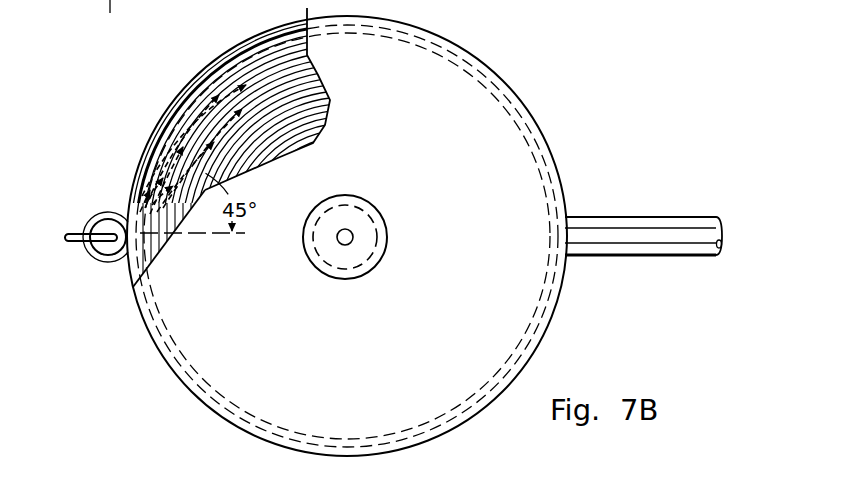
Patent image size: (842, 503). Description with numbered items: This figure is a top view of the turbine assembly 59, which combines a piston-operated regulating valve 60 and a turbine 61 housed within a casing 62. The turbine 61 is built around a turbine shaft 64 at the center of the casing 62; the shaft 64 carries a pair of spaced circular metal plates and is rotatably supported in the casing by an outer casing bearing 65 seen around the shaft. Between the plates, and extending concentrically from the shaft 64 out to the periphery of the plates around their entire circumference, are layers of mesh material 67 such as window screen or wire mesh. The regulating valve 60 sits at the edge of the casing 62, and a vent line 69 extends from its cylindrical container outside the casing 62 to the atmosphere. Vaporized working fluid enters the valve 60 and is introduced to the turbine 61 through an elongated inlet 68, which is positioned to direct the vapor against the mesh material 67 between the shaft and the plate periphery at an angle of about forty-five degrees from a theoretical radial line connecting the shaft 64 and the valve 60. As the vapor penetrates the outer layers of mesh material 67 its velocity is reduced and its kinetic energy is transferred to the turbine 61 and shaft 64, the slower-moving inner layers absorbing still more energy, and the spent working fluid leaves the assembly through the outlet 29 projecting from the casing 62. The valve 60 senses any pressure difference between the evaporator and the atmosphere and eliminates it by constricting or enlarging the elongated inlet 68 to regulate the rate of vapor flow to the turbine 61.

The outlet 29 is at (628, 230).
The turbine assembly 59 is at (607, 93).
The piston-operated regulating valve 60 is at (103, 250).
The turbine 61 is at (167, 332).
The casing 62 is at (555, 297).
The turbine shaft 64 is at (346, 229).
The outer casing bearing 65 is at (365, 238).
The mesh material 67 is at (347, 230).
The elongated inlet 68 is at (153, 266).
The vent line 69 is at (75, 230).